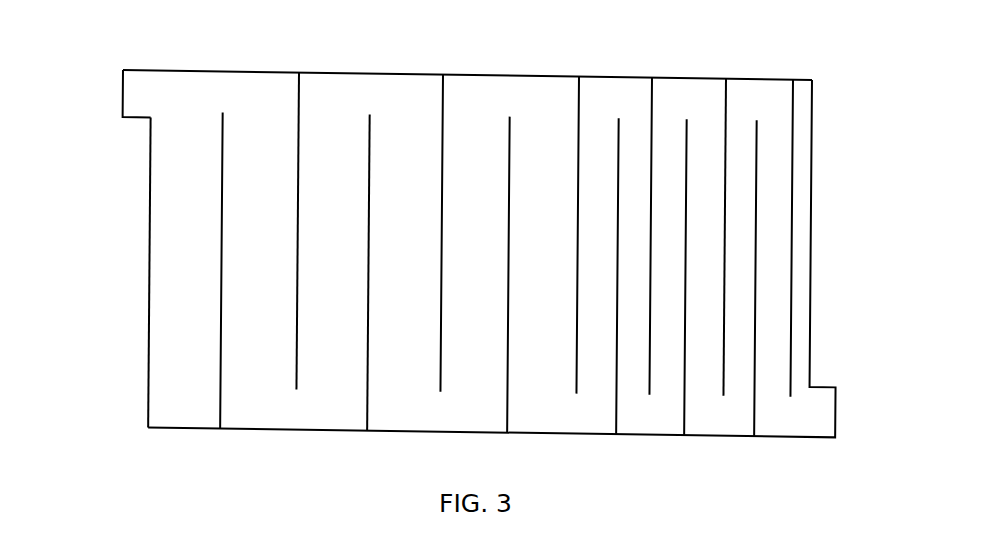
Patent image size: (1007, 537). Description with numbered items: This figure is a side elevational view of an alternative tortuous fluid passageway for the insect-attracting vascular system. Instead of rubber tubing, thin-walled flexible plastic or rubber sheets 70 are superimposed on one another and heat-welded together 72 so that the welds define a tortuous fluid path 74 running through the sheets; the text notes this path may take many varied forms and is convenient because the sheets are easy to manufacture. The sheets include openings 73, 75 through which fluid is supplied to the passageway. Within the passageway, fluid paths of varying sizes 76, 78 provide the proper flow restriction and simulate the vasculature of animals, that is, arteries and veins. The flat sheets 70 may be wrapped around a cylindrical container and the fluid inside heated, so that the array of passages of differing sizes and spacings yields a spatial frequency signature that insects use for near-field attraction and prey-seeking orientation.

The thin-walled flexible plastic or rubber sheets 70 is at (251, 70).
The heat-welded joints 72 is at (368, 412).
The opening 73 is at (129, 99).
The tortuous fluid path 74 is at (355, 104).
The opening 75 is at (830, 417).
The fluid path of a first size 76 is at (162, 318).
The fluid path of a second size 78 is at (700, 393).